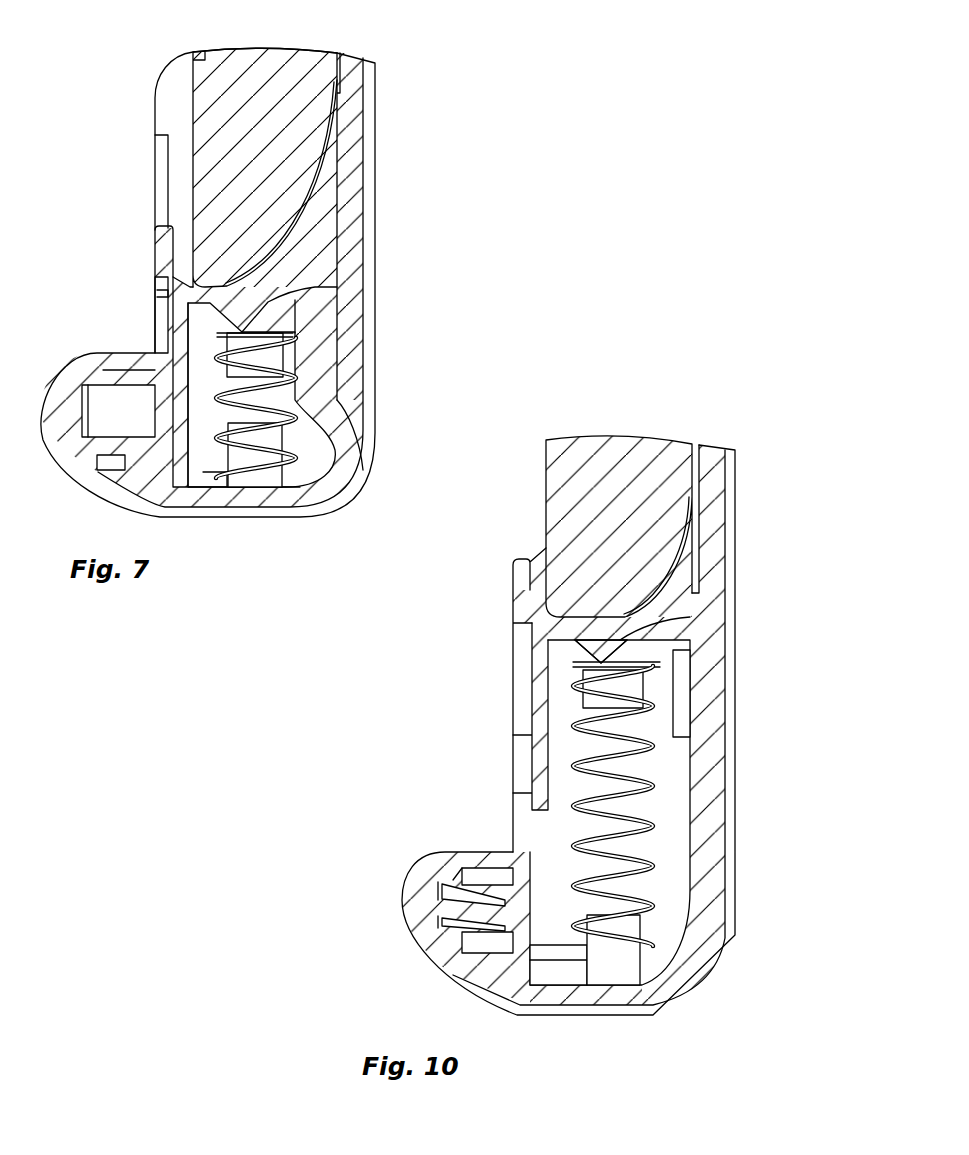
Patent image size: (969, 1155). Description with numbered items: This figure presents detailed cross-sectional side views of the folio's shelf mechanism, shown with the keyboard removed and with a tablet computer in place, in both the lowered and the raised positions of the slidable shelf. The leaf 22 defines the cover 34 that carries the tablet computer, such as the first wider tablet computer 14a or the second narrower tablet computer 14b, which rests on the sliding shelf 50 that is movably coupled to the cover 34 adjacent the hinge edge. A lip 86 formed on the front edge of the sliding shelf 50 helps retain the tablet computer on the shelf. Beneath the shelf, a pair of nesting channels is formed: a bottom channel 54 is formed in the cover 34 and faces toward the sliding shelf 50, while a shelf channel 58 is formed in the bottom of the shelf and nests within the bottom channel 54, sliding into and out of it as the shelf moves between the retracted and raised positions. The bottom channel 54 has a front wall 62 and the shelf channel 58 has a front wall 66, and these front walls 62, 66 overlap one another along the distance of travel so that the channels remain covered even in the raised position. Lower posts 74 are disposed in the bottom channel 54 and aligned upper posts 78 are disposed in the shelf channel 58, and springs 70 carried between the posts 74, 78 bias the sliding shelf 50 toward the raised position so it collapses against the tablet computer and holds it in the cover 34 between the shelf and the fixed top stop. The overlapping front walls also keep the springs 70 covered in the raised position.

In FIG. 7, the first wider tablet computer 14a is at (237, 60).
In FIG. 10, the second narrower tablet computer 14b is at (607, 447).
In FIG. 7, the leaf 22 is at (370, 83).
In FIG. 10, the leaf 22 is at (731, 523).
In FIG. 7, the cover 34 is at (372, 130).
In FIG. 10, the cover 34 is at (727, 595).
In FIG. 7, the sliding shelf 50 is at (140, 217).
In FIG. 10, the sliding shelf 50 is at (498, 628).
In FIG. 7, the bottom channel 54 is at (167, 437).
In FIG. 10, the bottom channel 54 is at (680, 680).
In FIG. 7, the shelf channel 58 is at (325, 335).
In FIG. 10, the shelf channel 58 is at (632, 640).
In FIG. 7, the front wall 62 is at (162, 318).
In FIG. 10, the front wall 62 is at (528, 817).
In FIG. 7, the front wall 66 is at (160, 250).
In FIG. 10, the front wall 66 is at (540, 717).
In FIG. 7, the springs 70 is at (310, 403).
In FIG. 10, the springs 70 is at (648, 788).
In FIG. 7, the lower posts 74 is at (253, 455).
In FIG. 10, the lower posts 74 is at (627, 952).
In FIG. 7, the upper posts 78 is at (277, 360).
In FIG. 10, the upper posts 78 is at (635, 700).
In FIG. 7, the lip 86 is at (165, 228).
In FIG. 10, the lip 86 is at (522, 560).